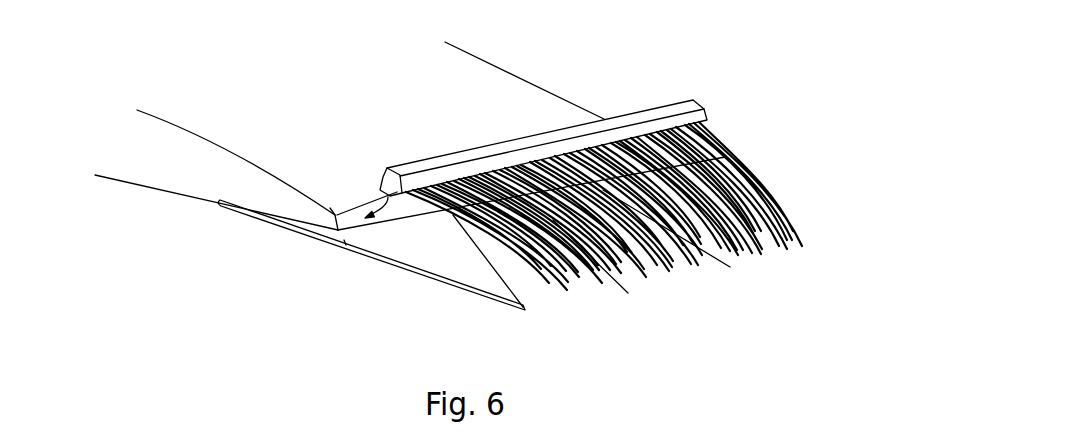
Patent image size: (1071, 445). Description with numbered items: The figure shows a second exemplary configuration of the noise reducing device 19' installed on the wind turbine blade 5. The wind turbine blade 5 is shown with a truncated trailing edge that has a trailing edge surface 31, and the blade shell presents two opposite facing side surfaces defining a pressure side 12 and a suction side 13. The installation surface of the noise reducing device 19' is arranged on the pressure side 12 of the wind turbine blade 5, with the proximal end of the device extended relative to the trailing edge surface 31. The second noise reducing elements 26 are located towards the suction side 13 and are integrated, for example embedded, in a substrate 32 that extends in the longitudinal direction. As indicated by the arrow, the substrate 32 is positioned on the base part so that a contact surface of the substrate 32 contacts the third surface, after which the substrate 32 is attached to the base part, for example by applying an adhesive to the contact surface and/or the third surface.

The wind turbine blade 5 is at (208, 70).
The pressure side 12 is at (168, 187).
The suction side 13 is at (353, 114).
The noise reducing device 19' is at (371, 263).
The second noise reducing elements 26 is at (768, 168).
The trailing edge surface 31 is at (400, 213).
The substrate 32 is at (695, 98).